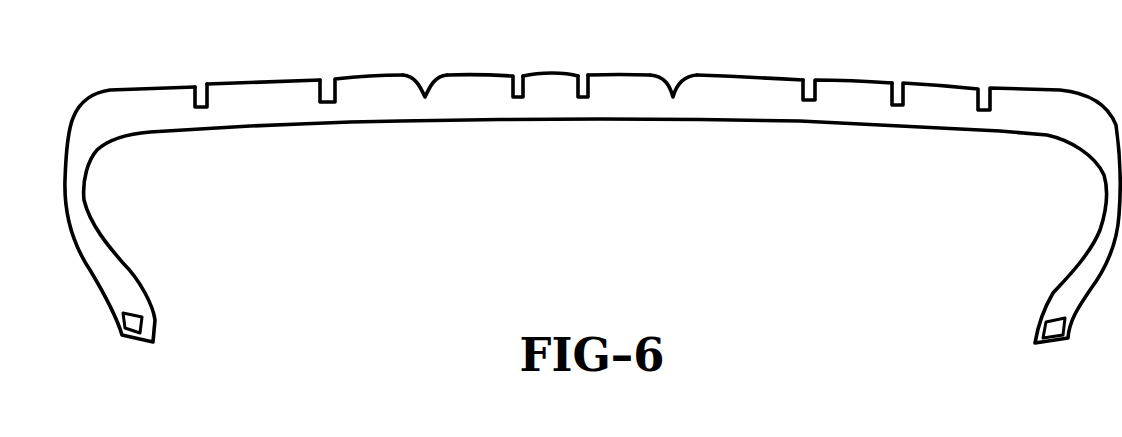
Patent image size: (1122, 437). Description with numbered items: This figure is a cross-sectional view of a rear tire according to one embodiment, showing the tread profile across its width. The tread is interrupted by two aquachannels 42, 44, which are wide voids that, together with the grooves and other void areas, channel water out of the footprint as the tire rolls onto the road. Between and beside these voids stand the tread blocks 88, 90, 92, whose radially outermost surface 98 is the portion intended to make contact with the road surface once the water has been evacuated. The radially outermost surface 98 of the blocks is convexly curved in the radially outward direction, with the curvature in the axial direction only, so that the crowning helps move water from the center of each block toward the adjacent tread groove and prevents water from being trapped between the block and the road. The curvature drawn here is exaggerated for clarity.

The aquachannel 42 is at (675, 96).
The aquachannel 44 is at (427, 96).
The tread block 88 is at (855, 92).
The tread block 90 is at (560, 92).
The tread block 92 is at (255, 92).
The radially outermost surface 98 is at (548, 74).